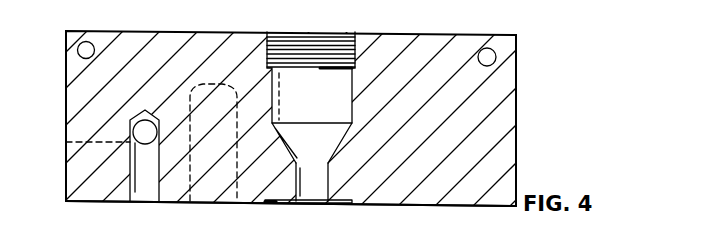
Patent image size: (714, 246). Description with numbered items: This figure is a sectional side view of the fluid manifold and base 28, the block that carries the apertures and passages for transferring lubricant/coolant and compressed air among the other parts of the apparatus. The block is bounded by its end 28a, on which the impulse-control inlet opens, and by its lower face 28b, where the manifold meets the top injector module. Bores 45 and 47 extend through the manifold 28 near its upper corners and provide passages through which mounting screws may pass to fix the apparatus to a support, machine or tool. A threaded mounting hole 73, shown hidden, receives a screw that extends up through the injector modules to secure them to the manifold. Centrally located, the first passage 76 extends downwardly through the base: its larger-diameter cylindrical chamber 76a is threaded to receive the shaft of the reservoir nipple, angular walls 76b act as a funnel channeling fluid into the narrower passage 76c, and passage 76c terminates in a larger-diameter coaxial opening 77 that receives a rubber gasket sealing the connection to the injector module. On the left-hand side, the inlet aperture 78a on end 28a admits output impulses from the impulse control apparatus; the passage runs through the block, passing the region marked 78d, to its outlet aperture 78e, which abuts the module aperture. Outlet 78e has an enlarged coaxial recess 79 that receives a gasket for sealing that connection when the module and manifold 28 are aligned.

The fluid manifold and base 28 is at (527, 52).
The end of base/manifold 28a is at (66, 107).
The bottom face of block 28b is at (437, 205).
The bore 45 is at (89, 48).
The bore 47 is at (487, 48).
The threaded mounting hole 73 is at (212, 198).
The first passage 76 is at (360, 77).
The larger-diameter cylindrical chamber 76a is at (341, 81).
The angular walls 76b is at (334, 137).
The passage 76c is at (322, 181).
The larger-diameter coaxial opening 77 is at (331, 205).
The inlet aperture 78a is at (66, 142).
The ball bore 78d is at (143, 167).
The outlet aperture 78e is at (145, 191).
The enlarged coaxial recess 79 is at (123, 199).